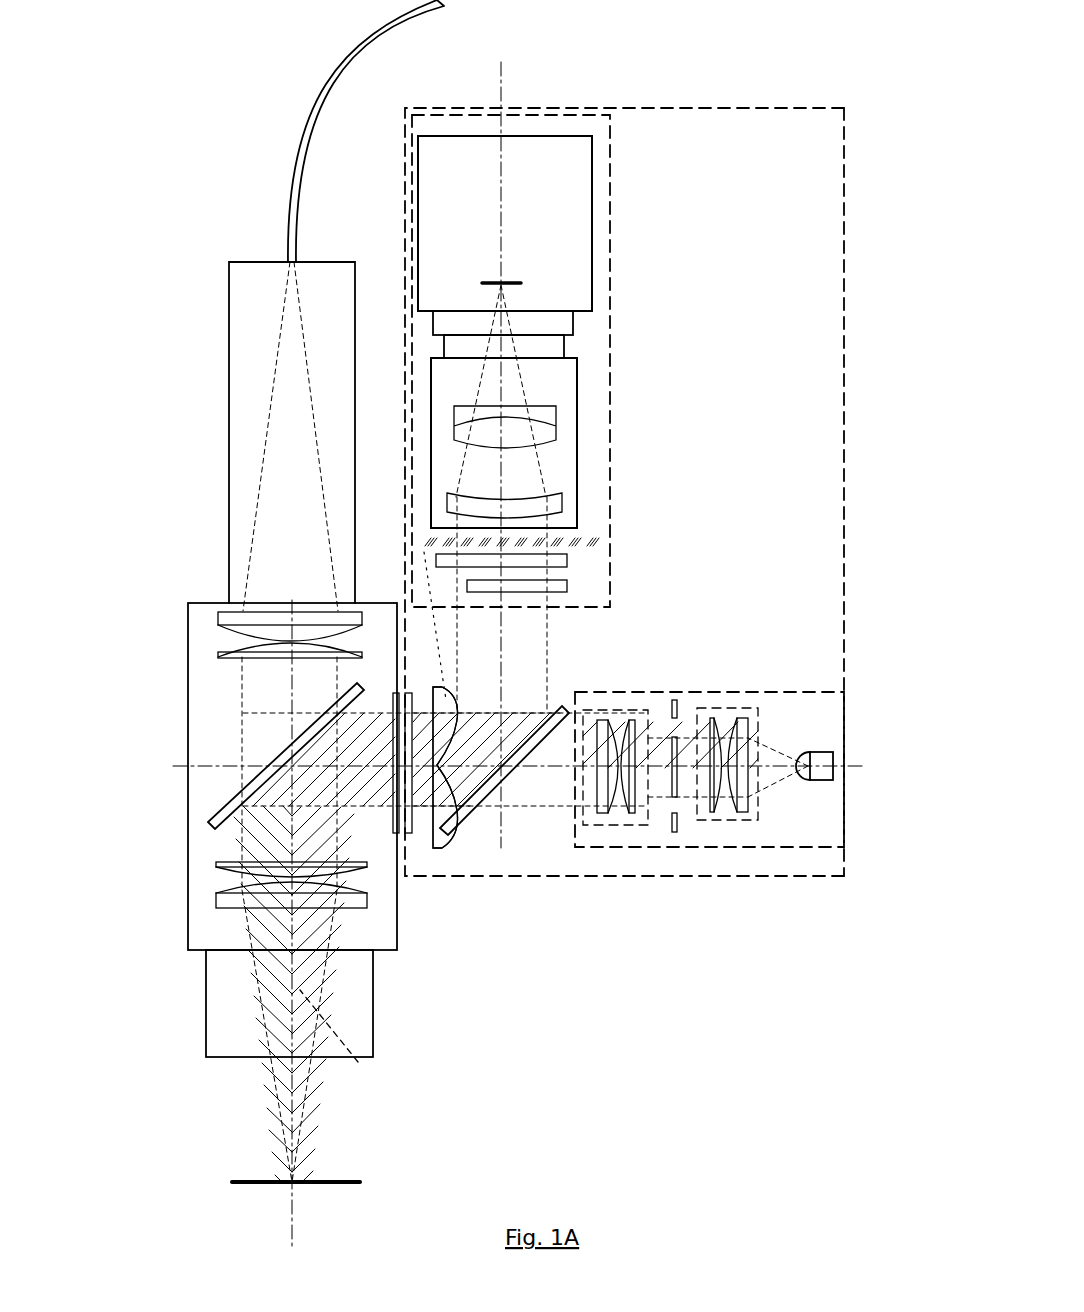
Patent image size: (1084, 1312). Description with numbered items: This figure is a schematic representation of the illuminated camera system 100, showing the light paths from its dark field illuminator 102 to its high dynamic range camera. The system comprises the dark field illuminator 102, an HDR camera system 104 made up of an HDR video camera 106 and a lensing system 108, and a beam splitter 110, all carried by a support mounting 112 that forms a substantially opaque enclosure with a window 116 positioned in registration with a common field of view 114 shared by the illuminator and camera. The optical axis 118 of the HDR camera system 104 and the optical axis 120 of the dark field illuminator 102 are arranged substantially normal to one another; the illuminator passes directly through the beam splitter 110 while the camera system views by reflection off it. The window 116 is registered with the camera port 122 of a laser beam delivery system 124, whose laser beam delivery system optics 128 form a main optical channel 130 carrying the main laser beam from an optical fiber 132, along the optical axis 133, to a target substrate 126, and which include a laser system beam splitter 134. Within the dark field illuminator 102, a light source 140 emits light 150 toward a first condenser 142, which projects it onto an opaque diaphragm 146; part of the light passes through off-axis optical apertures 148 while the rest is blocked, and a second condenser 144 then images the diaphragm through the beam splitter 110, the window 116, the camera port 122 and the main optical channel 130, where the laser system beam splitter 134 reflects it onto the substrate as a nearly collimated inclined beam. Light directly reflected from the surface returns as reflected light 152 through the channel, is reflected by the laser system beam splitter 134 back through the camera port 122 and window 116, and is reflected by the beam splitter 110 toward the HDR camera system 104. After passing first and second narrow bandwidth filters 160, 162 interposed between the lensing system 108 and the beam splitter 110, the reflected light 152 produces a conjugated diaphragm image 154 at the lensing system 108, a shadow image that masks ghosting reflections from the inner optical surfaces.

The illuminated camera system 100 is at (780, 98).
The dark field illuminator 102 is at (792, 852).
The HDR camera system 104 is at (615, 247).
The HDR video camera 106 is at (585, 205).
The lensing system 108 is at (578, 450).
The beam splitter 110 is at (421, 853).
The support mounting 112 is at (845, 342).
The common field of view 114 is at (440, 760).
The window 116 is at (407, 835).
The optical axis of the HDR camera system 118 is at (500, 655).
The optical axis of the dark field illuminator 120 is at (547, 762).
The camera port 122 is at (394, 835).
The laser beam delivery system 124 is at (143, 660).
The target substrate 126 is at (345, 1181).
The laser beam delivery system optics 128 is at (210, 614).
The main optical channel 130 is at (340, 676).
The optical fiber 132 is at (296, 195).
The optical axis of the laser beam delivery system 133 is at (358, 1062).
The laser system beam splitter 134 is at (310, 738).
The light source 140 is at (818, 753).
The first condenser 142 is at (717, 708).
The second condenser 144 is at (631, 718).
The opaque diaphragm 146 is at (673, 700).
The off-axis optical apertures 148 is at (672, 738).
The light 150 is at (777, 743).
The reflected light 152 is at (437, 650).
The conjugated diaphragm image 154 is at (422, 543).
The first narrow bandwidth filter 160 is at (567, 560).
The second narrow bandwidth filter 162 is at (567, 587).